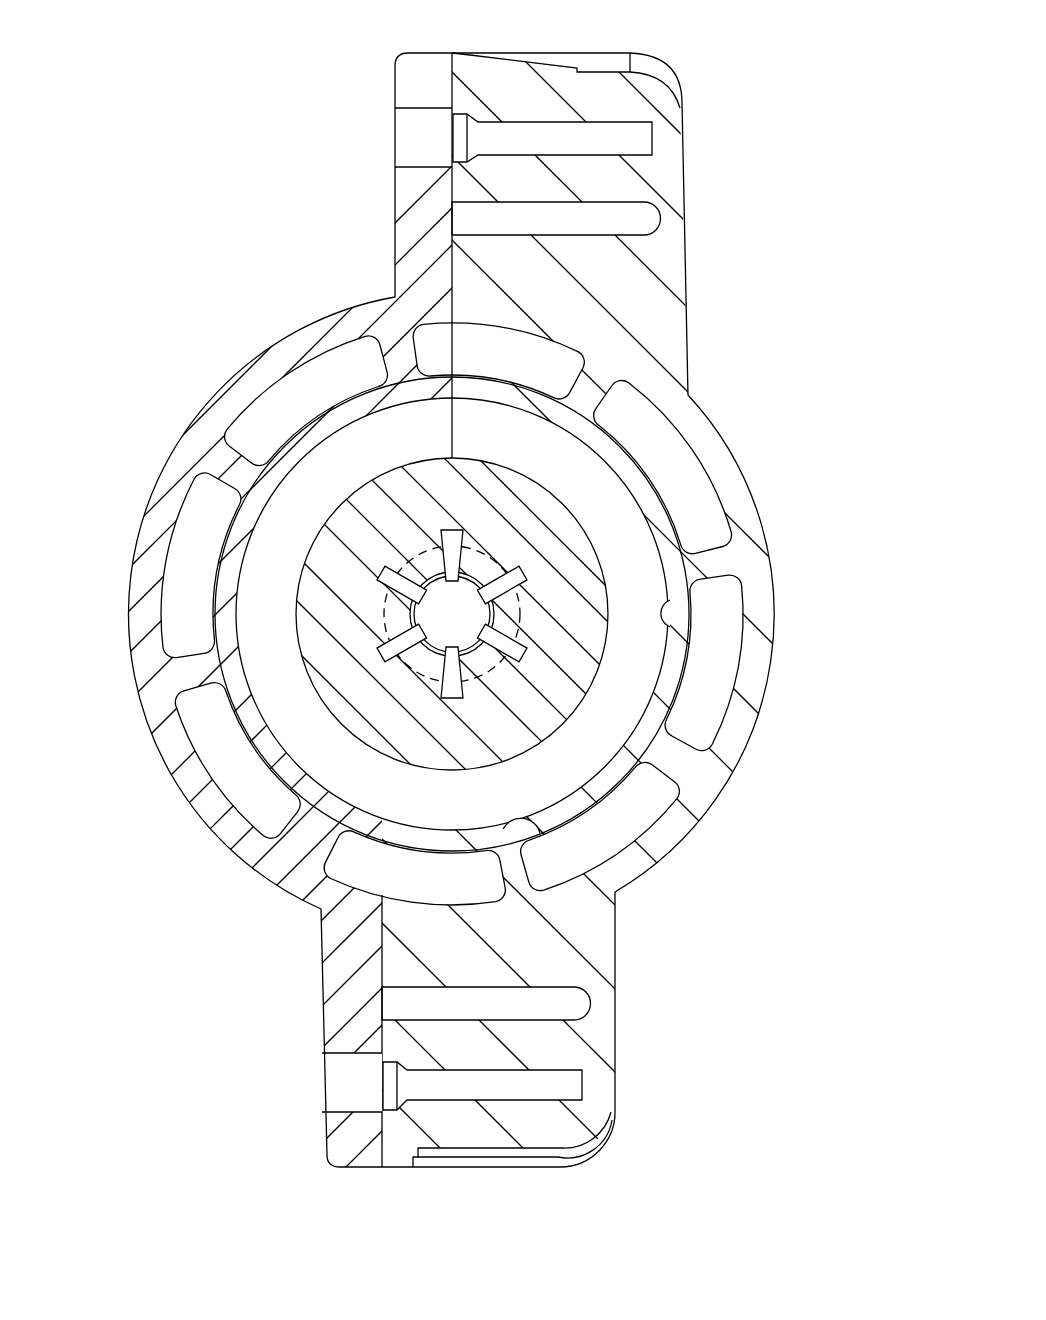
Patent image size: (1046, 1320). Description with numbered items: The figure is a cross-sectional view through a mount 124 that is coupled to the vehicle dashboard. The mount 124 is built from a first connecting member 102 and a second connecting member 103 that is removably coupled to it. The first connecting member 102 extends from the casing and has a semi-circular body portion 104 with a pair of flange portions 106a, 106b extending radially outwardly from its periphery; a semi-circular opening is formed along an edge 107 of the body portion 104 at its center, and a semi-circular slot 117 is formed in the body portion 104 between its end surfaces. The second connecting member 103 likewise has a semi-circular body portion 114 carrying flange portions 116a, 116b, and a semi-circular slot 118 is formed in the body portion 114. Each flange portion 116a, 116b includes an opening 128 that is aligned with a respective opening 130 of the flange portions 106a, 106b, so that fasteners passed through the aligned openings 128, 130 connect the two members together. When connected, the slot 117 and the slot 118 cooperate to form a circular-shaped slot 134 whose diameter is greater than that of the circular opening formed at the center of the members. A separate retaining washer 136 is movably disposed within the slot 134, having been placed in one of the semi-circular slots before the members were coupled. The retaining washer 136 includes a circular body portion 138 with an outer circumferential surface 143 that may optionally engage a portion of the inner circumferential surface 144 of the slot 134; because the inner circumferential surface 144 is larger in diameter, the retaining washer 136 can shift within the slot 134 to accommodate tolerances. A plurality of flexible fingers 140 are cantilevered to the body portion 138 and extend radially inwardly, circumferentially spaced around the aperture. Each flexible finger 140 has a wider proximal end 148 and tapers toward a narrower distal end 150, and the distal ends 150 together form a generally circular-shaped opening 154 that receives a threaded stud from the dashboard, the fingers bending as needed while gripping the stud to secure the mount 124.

The first connecting member 102 is at (708, 118).
The second connecting member 103 is at (257, 322).
The body portion 104 is at (763, 435).
The flange portion 106a is at (650, 258).
The flange portion 106b is at (598, 1027).
The edge 107 is at (448, 258).
The body portion 114 is at (128, 630).
The flange portion 116a is at (413, 206).
The flange portion 116b is at (345, 997).
The semi-circular slot 117 is at (655, 615).
The semi-circular slot 118 is at (250, 642).
The mount 124 is at (693, 68).
The opening 128 is at (420, 134).
The opening 130 is at (597, 135).
The circular-shaped slot 134 is at (617, 713).
The retaining washer 136 is at (563, 532).
The body portion 138 is at (388, 740).
The flexible fingers 140 is at (424, 547).
The outer circumferential surface 143 is at (413, 472).
The inner circumferential surface 144 is at (505, 806).
The proximal end 148 is at (493, 677).
The distal end 150 is at (497, 665).
The circular-shaped opening 154 is at (437, 618).